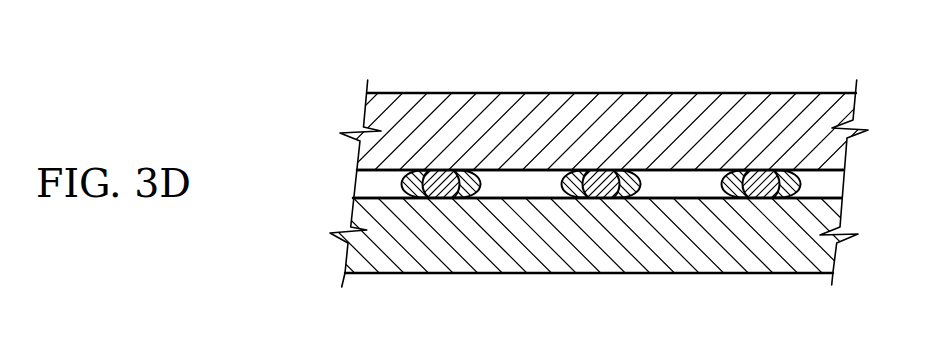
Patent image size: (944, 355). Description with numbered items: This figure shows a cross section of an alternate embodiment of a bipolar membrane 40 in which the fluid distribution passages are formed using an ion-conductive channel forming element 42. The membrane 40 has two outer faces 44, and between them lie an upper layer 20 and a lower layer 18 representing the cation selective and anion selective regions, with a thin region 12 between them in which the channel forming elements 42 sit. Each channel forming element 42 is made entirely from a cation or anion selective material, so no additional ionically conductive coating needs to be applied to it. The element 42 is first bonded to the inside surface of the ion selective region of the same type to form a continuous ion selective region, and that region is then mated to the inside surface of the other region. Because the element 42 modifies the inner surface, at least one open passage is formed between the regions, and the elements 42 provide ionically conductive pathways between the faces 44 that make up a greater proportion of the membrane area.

The membrane 40 is at (334, 59).
The top layer 20 is at (423, 93).
The faces of the membrane 44 is at (671, 93).
The channel forming element 42 is at (403, 183).
The adhesive layer 12 is at (393, 197).
The bottom layer 18 is at (405, 274).